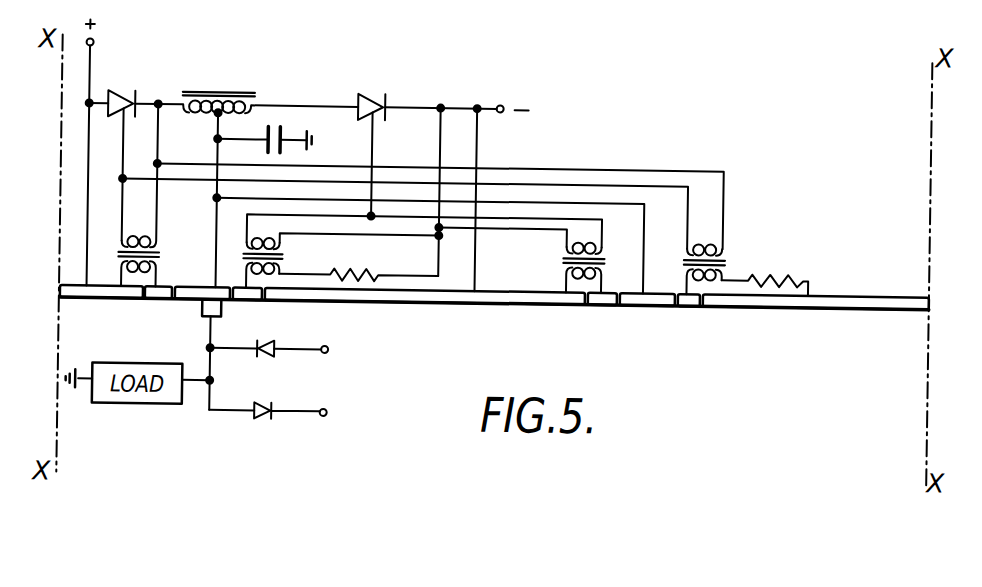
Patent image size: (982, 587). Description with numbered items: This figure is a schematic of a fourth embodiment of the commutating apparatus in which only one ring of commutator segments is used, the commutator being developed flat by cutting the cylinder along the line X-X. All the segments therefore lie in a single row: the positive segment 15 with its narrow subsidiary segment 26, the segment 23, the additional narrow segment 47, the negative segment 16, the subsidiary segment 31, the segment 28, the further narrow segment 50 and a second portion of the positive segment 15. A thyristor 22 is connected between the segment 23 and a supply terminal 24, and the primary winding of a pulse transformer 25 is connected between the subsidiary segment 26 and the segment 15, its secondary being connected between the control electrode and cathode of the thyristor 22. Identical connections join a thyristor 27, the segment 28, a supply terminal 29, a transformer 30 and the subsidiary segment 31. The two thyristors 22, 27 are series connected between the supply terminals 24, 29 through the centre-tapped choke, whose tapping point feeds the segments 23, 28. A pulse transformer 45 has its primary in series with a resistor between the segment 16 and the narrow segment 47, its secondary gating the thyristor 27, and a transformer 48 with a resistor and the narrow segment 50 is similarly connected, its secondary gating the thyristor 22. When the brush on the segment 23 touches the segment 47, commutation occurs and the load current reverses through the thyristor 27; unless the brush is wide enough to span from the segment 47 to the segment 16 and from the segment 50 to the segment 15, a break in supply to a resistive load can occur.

The positive segment 15 is at (114, 304).
The negative segment 16 is at (376, 304).
The thyristor 22 is at (114, 100).
The segment 23 is at (183, 304).
The supply terminal 24 is at (90, 47).
The pulse transformer 25 is at (93, 258).
The subsidiary segment 26 is at (165, 304).
The thyristor 27 is at (364, 98).
The segment 28 is at (637, 304).
The supply terminal 29 is at (500, 104).
The transformer 30 is at (529, 274).
The subsidiary segment 31 is at (613, 304).
The pulse transformer 45 is at (293, 268).
The additional narrow segment 47 is at (250, 304).
The transformer 48 is at (751, 260).
The additional narrow segment 50 is at (692, 304).